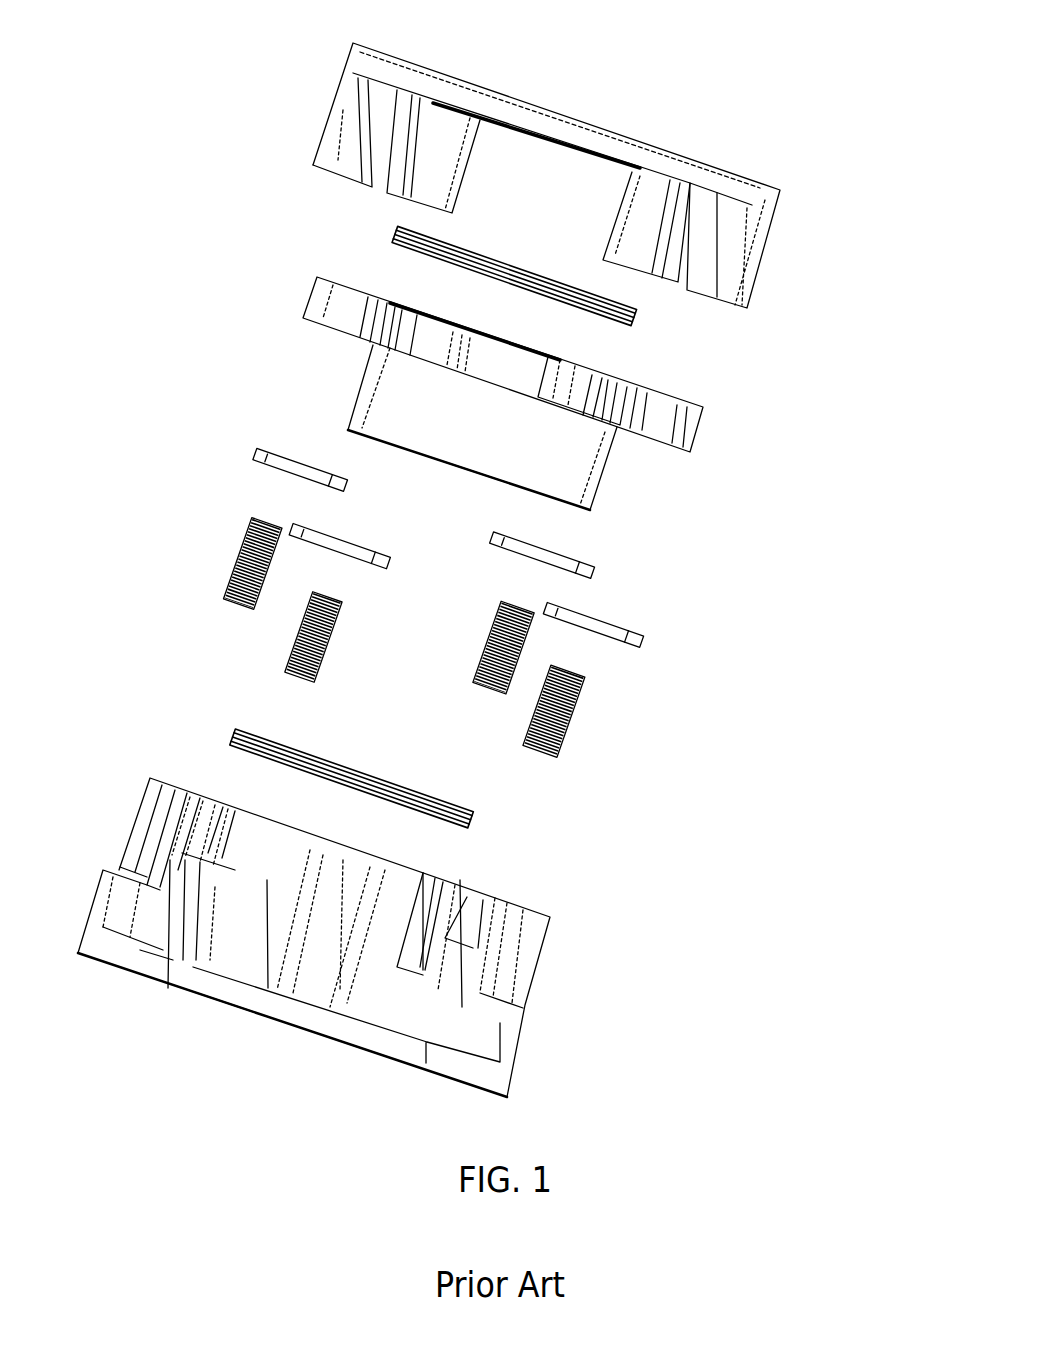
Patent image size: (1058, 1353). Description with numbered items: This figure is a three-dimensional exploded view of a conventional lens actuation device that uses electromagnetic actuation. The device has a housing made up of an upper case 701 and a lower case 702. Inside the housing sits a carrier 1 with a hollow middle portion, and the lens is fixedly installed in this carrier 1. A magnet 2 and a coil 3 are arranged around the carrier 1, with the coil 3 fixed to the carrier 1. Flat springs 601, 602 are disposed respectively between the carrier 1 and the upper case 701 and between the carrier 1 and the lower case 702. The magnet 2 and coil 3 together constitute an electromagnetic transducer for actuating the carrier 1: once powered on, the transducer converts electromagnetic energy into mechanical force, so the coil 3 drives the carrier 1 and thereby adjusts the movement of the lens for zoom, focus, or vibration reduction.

The upper case 701 is at (631, 121).
The flat spring 601 is at (637, 319).
The carrier 1 is at (661, 423).
The magnet 2 is at (581, 573).
The coil 3 is at (583, 697).
The flat spring 602 is at (476, 828).
The lower case 702 is at (478, 1017).